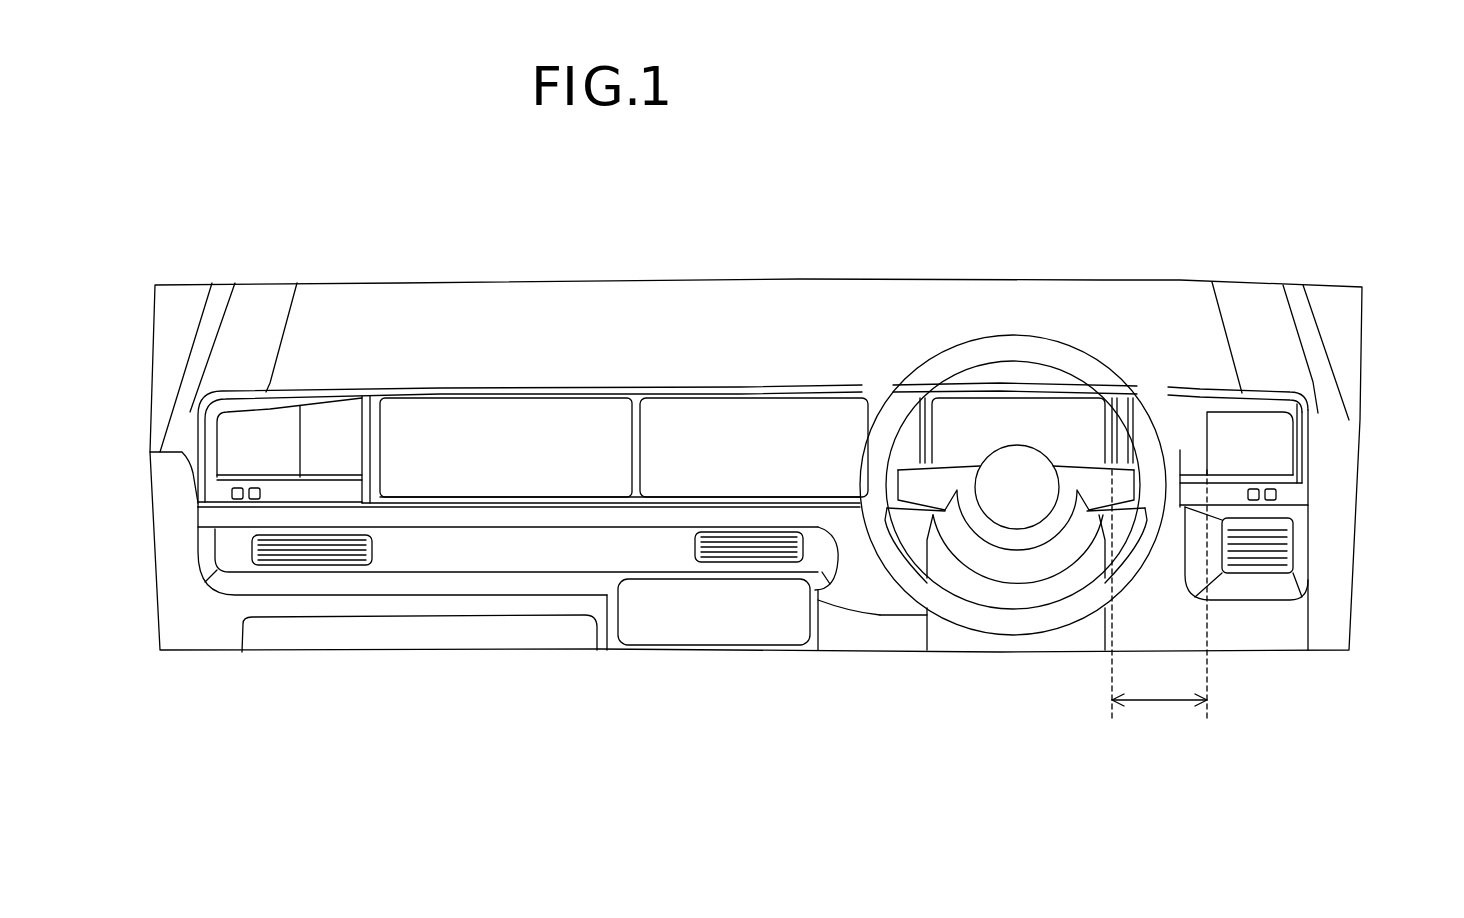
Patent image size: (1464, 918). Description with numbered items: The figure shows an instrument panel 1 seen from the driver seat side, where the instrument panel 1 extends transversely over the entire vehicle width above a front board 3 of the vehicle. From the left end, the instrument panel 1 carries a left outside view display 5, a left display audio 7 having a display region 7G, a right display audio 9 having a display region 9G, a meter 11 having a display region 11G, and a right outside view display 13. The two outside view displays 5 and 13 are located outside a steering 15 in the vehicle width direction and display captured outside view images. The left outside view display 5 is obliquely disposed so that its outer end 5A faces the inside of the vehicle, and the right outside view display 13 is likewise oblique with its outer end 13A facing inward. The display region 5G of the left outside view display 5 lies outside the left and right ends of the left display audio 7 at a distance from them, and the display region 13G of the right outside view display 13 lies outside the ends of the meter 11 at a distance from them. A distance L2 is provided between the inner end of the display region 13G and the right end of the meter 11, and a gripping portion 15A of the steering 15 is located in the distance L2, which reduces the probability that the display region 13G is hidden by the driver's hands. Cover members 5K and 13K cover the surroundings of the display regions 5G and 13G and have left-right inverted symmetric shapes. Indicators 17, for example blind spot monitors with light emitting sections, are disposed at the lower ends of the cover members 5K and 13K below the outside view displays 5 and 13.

The instrument panel 1 is at (770, 350).
The front board 3 is at (440, 515).
The left outside view display 5 is at (286, 428).
The outer end 5A is at (200, 433).
The display region 5G is at (250, 447).
The cover member 5K is at (197, 413).
The left display audio 7 is at (573, 432).
The display region 7G is at (492, 432).
The right display audio 9 is at (684, 432).
The display region 9G is at (830, 432).
The meter 11 is at (985, 423).
The display region 11G is at (1060, 420).
The right outside view display 13 is at (1253, 436).
The outer end 13A is at (1297, 461).
The display region 13G is at (1270, 450).
The cover member 13K is at (1313, 395).
The steering 15 is at (968, 612).
The gripping portion 15A is at (1160, 510).
The indicators 17 is at (232, 495).
The distance L2 is at (1159, 601).